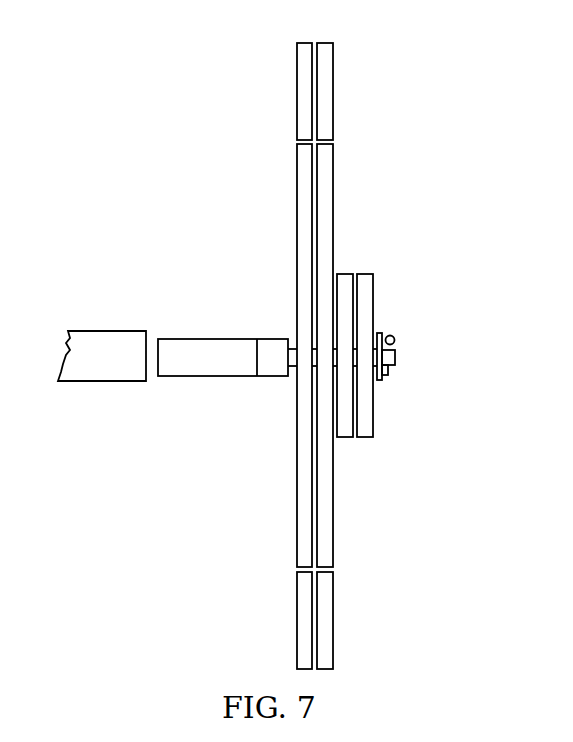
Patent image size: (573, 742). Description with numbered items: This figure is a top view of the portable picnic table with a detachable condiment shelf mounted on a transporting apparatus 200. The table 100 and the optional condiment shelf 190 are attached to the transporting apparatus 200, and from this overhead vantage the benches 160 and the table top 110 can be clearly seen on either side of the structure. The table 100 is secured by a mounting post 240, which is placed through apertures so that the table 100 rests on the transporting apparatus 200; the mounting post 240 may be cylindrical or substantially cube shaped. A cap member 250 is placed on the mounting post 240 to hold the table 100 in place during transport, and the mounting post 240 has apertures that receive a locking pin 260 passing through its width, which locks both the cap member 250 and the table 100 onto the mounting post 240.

The table 100 is at (380, 170).
The table top 110 is at (328, 157).
The benches 160 is at (328, 69).
The condiment shelf 190 is at (366, 289).
The transporting apparatus 200 is at (170, 296).
The mounting post 240 is at (393, 353).
The cap member 250 is at (382, 378).
The locking pin 260 is at (393, 337).